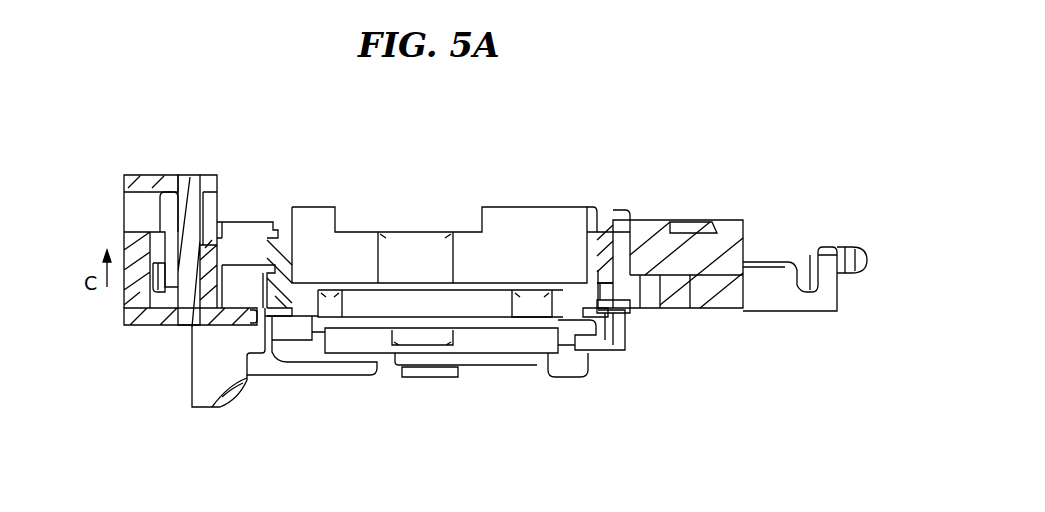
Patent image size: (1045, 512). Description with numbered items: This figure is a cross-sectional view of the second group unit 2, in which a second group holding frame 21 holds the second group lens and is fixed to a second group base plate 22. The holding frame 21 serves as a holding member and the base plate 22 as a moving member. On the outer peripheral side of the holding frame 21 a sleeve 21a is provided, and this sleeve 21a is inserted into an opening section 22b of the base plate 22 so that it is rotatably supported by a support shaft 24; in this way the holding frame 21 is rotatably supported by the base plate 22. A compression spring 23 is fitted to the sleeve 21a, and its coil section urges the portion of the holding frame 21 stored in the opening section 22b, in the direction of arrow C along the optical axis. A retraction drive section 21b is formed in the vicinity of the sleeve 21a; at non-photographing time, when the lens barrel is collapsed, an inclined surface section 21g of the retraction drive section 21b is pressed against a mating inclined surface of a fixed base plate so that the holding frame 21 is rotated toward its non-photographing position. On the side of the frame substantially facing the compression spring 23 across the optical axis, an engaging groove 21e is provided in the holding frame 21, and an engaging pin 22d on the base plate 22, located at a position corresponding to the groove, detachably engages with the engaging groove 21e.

The second group unit 2 is at (498, 192).
The second group holding frame 21 is at (226, 250).
The sleeve 21a is at (210, 243).
The retraction drive section 21b is at (205, 378).
The engaging groove 21e is at (605, 310).
The inclined surface section 21g is at (230, 387).
The second group base plate 22 is at (170, 180).
The opening section 22b is at (137, 235).
The engaging pin 22d is at (623, 303).
The compression spring 23 is at (148, 275).
The support shaft 24 is at (185, 207).